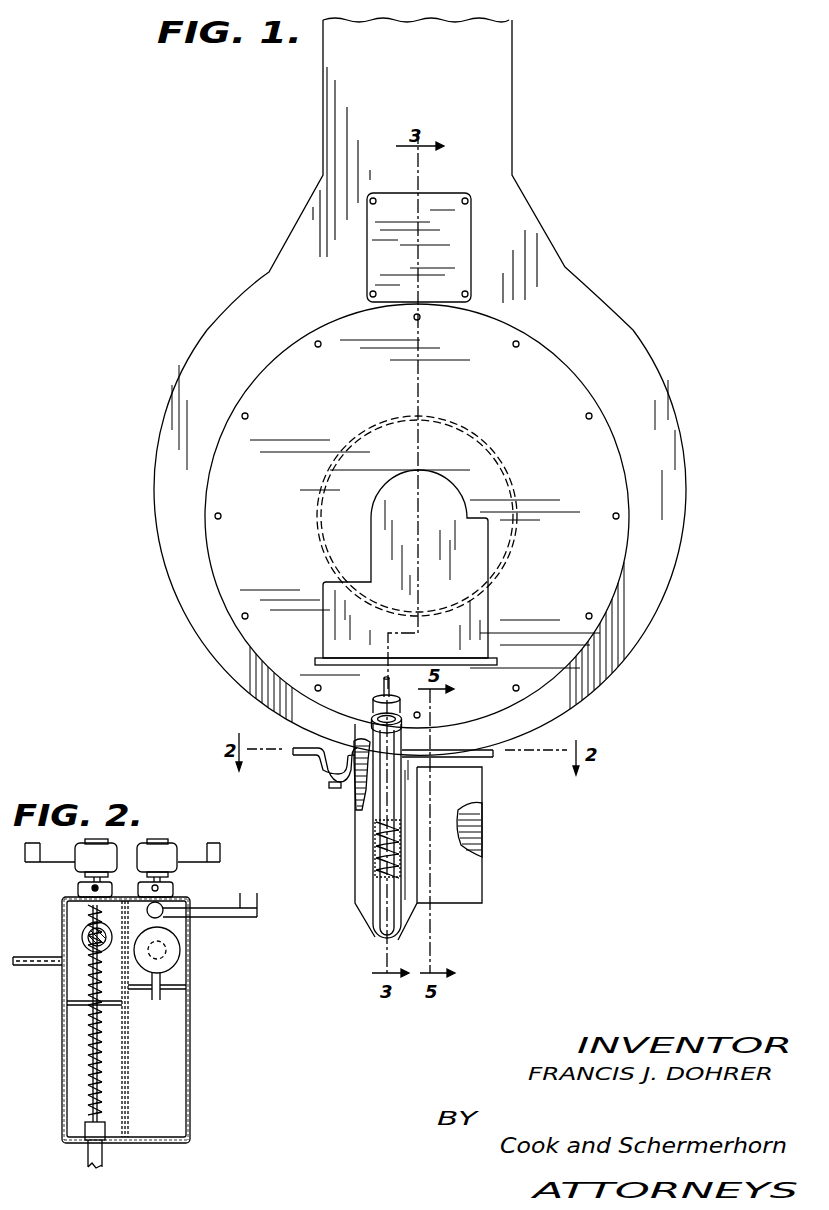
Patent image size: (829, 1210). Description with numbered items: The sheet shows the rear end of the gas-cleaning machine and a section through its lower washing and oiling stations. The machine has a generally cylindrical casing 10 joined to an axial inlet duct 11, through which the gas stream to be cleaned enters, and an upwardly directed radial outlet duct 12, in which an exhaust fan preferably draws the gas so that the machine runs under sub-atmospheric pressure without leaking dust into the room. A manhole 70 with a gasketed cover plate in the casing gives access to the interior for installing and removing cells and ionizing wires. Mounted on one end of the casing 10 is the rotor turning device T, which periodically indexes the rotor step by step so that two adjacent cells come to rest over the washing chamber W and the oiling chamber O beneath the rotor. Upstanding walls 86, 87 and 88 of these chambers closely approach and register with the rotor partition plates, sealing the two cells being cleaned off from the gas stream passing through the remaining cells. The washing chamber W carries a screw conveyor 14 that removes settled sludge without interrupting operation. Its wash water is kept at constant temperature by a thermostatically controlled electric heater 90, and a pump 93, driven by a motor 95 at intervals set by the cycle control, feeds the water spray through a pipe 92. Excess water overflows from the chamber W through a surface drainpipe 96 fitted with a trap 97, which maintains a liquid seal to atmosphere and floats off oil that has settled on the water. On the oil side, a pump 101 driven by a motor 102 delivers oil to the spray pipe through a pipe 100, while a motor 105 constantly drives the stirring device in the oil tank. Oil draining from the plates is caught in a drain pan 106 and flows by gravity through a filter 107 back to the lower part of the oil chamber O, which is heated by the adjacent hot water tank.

In FIG. 1, the casing 10 is at (620, 330).
In FIG. 1, the axial inlet duct 11 is at (453, 423).
In FIG. 1, the radial outlet duct 12 is at (503, 100).
In FIG. 1, the screw conveyor 14 is at (380, 860).
In FIG. 2, the screw conveyor 14 is at (90, 1087).
In FIG. 1, the manhole 70 is at (466, 224).
In FIG. 1, the rotor turning device T is at (485, 602).
In FIG. 1, the oiling chamber O is at (485, 832).
In FIG. 2, the oiling chamber O is at (175, 1038).
In FIG. 1, the washing chamber W is at (355, 790).
In FIG. 2, the washing chamber W is at (75, 1058).
In FIG. 1, the surface drainpipe 96 is at (300, 758).
In FIG. 2, the surface drainpipe 96 is at (30, 963).
In FIG. 1, the trap 97 is at (330, 767).
In FIG. 1, the drain pan 106 is at (467, 777).
In FIG. 2, the drain pan 106 is at (172, 1087).
In FIG. 2, the upstanding wall 86 is at (66, 1033).
In FIG. 2, the upstanding wall 87 is at (128, 1042).
In FIG. 2, the upstanding wall 88 is at (190, 1017).
In FIG. 2, the electric heater 90 is at (82, 935).
In FIG. 2, the pipe 92 is at (98, 887).
In FIG. 2, the pump 93 is at (78, 887).
In FIG. 2, the motor 95 is at (77, 867).
In FIG. 2, the pipe 100 is at (158, 888).
In FIG. 2, the pump 101 is at (173, 890).
In FIG. 2, the motor 102 is at (170, 853).
In FIG. 2, the motor 105 is at (162, 917).
In FIG. 2, the filter 107 is at (172, 955).